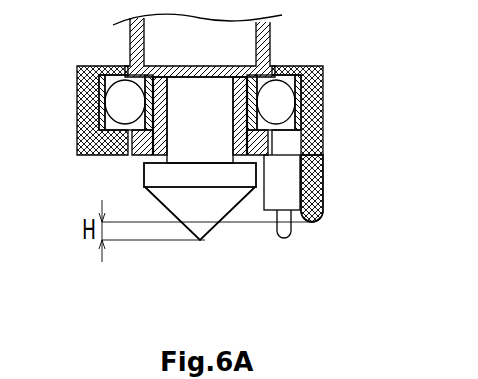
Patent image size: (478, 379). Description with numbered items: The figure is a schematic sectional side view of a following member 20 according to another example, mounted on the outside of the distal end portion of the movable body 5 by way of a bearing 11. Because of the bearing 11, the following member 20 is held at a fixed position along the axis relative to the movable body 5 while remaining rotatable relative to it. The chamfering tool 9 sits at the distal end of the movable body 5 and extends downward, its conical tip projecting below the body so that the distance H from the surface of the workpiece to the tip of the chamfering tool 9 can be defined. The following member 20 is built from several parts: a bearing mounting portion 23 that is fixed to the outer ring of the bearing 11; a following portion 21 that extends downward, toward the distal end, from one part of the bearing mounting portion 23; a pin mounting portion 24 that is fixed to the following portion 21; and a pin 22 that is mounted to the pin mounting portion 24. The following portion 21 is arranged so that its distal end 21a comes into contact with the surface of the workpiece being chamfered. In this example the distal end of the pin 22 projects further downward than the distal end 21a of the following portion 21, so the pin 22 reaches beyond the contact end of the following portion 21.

The movable body 5 is at (130, 34).
The following member 20 is at (262, 153).
The bearing mounting portion 23 is at (323, 122).
The following portion 21 is at (323, 175).
The distal end 21a is at (312, 222).
The bearing 11 is at (77, 108).
The chamfering tool 9 is at (143, 172).
The pin mounting portion 24 is at (273, 190).
The pin 22 is at (280, 240).